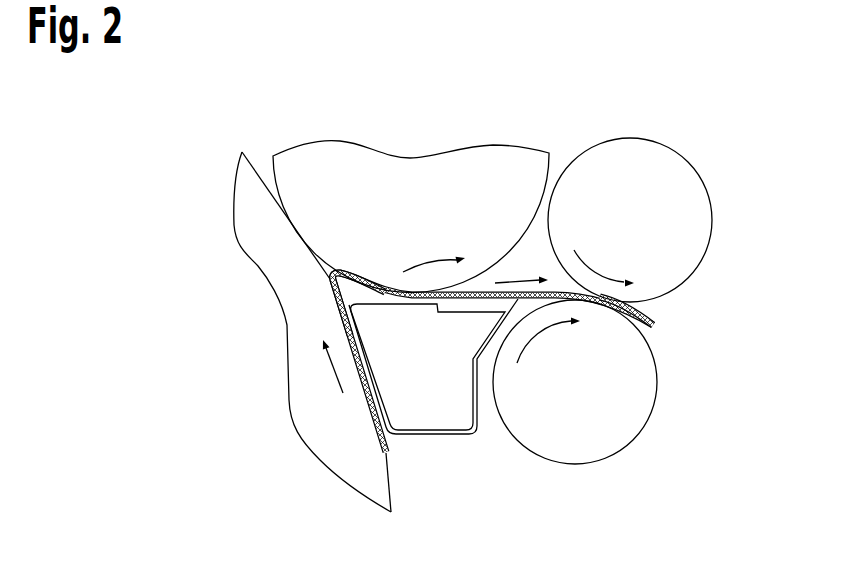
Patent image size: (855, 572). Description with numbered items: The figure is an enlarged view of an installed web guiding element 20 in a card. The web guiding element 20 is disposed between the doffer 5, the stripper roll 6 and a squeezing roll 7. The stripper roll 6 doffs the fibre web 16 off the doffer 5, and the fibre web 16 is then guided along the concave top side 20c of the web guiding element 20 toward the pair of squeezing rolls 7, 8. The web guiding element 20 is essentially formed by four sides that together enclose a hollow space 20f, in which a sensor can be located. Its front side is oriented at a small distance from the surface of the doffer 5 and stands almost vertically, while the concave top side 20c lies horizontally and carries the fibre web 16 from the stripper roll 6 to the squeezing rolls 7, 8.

The doffer 5 is at (307, 390).
The stripper roll 6 is at (330, 157).
The squeezing roll 7 is at (628, 157).
The squeezing roll 8 is at (637, 413).
The fibre web 16 is at (655, 322).
The web guiding element 20 is at (422, 446).
The concave top side 20c is at (330, 286).
The hollow space 20f is at (452, 412).